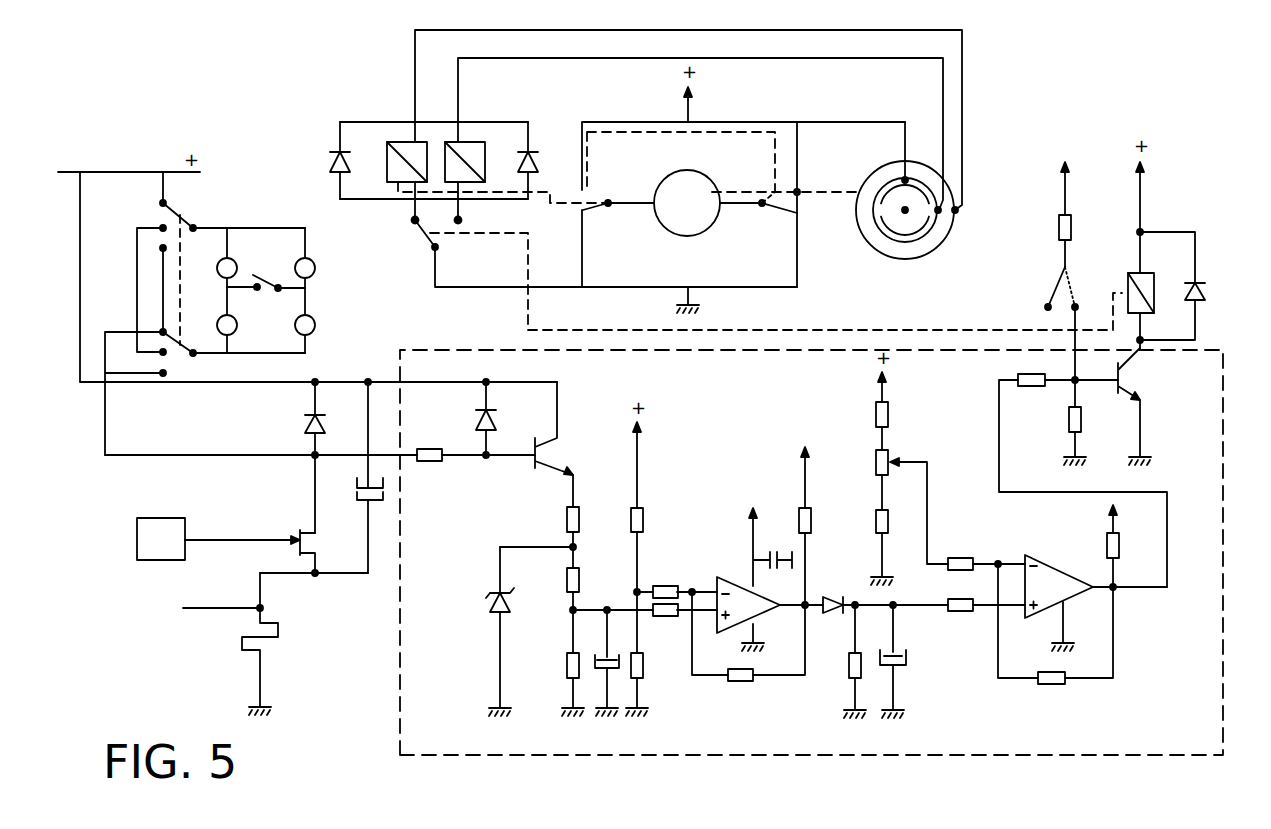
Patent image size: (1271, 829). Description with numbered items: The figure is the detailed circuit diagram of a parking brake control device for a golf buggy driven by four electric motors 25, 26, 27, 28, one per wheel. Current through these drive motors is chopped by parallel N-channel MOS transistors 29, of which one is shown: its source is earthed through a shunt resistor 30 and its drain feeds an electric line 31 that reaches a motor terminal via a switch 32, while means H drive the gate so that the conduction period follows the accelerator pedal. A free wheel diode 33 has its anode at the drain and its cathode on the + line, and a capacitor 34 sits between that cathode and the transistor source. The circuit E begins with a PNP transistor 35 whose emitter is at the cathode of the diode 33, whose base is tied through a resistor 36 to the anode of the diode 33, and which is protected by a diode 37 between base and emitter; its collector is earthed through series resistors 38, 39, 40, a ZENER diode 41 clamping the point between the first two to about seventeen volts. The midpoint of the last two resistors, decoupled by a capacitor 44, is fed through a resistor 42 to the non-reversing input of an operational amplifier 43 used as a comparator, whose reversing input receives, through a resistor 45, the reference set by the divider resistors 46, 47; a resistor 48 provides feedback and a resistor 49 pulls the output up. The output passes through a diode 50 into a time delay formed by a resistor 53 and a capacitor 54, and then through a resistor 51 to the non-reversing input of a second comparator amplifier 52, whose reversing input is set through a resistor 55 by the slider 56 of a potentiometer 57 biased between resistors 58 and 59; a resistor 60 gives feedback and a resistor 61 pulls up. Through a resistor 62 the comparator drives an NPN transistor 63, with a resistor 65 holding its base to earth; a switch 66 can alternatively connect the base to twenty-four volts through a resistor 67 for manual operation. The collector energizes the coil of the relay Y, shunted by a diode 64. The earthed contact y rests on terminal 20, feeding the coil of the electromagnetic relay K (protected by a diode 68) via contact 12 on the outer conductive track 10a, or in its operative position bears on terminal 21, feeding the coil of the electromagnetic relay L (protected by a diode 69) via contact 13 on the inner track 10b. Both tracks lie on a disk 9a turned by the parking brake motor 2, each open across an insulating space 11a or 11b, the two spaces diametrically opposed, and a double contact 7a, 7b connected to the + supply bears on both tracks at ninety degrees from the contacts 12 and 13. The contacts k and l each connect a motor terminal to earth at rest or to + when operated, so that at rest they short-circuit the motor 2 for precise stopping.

The electric motor 2 is at (697, 222).
The double contact 7a is at (905, 176).
The double contact 7b is at (900, 182).
The disk 9a is at (930, 176).
The outer conductive track 10a is at (880, 248).
The second conductive track 10b is at (908, 242).
The insulating space 11a is at (945, 218).
The insulating space 11b is at (862, 224).
The contact 12 is at (957, 208).
The contact 13 is at (940, 230).
The terminal 20 is at (412, 223).
The terminal 21 is at (462, 221).
The electric motor 25 is at (238, 255).
The electric motor 26 is at (316, 255).
The electric motor 27 is at (238, 311).
The electric motor 28 is at (316, 311).
The MOS transistor 29 is at (300, 528).
The resistor 30 is at (282, 634).
The electric line 31 is at (185, 455).
The switch 32 is at (180, 216).
The free wheel diode 33 is at (305, 425).
The capacitor 34 is at (384, 494).
The transistor 35 is at (560, 457).
The resistor 36 is at (432, 462).
The diode 37 is at (476, 424).
The resistor 38 is at (567, 520).
The resistor 39 is at (580, 578).
The resistor 40 is at (567, 668).
The ZENER diode 41 is at (482, 605).
The resistor 42 is at (665, 617).
The operational amplifier 43 is at (730, 580).
The capacitor 44 is at (600, 660).
The resistor 45 is at (665, 586).
The resistor 46 is at (645, 515).
The resistor 47 is at (645, 680).
The resistor 48 is at (740, 681).
The resistor 49 is at (802, 510).
The diode 50 is at (835, 595).
The resistor 51 is at (960, 612).
The operational amplifier 52 is at (1038, 556).
The resistor 53 is at (848, 672).
The capacitor 54 is at (906, 660).
The resistor 55 is at (962, 558).
The slider 56 is at (912, 448).
The potentiometer 57 is at (876, 460).
The resistor 58 is at (876, 408).
The resistor 59 is at (876, 515).
The resistor 60 is at (1048, 684).
The resistor 61 is at (1107, 540).
The resistor 62 is at (1025, 374).
The transistor 63 is at (1143, 378).
The diode 64 is at (1203, 300).
The resistor 65 is at (1068, 420).
The switch 66 is at (1044, 290).
The resistor 67 is at (1072, 228).
The diode 68 is at (330, 160).
The diode 69 is at (536, 150).
The electromagnetic relay K is at (395, 142).
The electromagnetic relay L is at (450, 142).
The relay Y is at (1128, 273).
The circuit E is at (399, 693).
The means for controlling the voltage of the grid H is at (157, 518).
The contact k is at (600, 207).
The contact l is at (770, 210).
The contact y is at (425, 240).